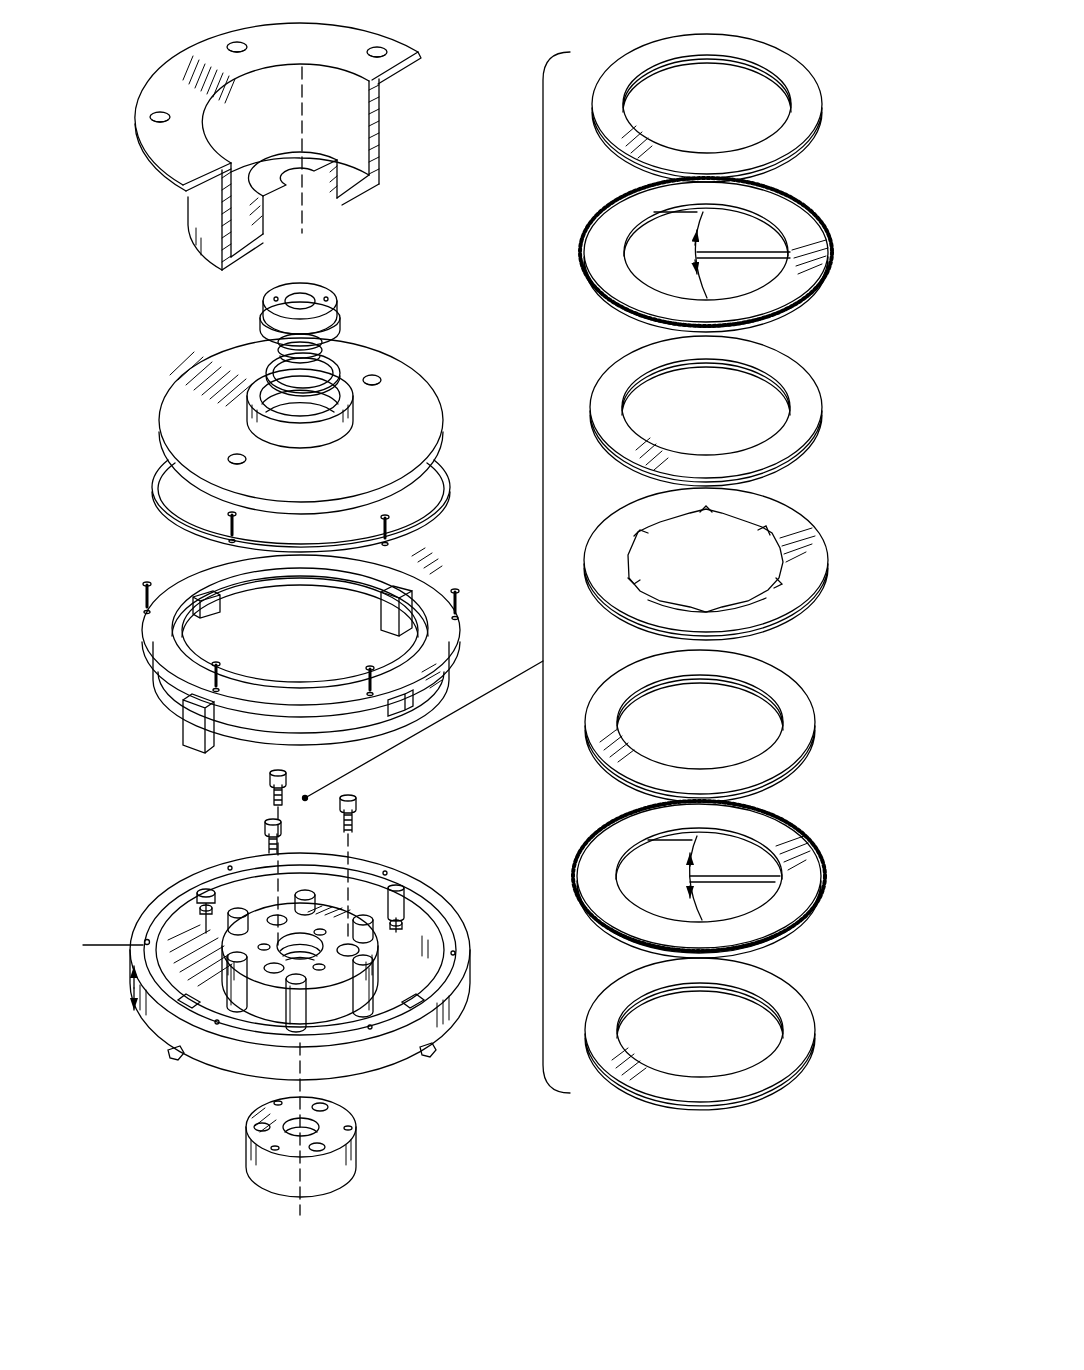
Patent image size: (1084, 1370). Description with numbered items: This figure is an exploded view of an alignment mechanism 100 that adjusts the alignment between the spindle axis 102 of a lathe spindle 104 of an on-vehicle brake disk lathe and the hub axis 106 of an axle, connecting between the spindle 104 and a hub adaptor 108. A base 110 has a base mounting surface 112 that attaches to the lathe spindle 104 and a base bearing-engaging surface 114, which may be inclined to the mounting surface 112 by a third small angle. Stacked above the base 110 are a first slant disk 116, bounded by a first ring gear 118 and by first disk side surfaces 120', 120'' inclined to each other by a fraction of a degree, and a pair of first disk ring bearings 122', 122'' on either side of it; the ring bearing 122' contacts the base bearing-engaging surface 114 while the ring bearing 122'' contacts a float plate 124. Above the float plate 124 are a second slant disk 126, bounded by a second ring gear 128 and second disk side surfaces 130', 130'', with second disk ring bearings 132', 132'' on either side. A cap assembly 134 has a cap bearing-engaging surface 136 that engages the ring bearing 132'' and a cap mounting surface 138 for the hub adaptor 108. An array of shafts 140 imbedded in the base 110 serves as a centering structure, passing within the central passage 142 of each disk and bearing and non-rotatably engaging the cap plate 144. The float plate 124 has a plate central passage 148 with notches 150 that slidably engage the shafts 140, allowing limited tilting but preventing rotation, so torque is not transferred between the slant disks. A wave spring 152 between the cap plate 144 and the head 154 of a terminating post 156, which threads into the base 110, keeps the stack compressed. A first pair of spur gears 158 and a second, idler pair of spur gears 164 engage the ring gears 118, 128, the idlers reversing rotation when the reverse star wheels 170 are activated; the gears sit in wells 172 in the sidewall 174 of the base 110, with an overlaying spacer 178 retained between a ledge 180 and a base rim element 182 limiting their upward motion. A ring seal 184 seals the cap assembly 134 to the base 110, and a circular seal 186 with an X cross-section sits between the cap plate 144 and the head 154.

The alignment mechanism 100 is at (137, 277).
The spindle axis 102 is at (297, 1075).
The lathe spindle 104 is at (353, 1147).
The hub axis 106 is at (302, 125).
The hub adaptor 108 is at (380, 160).
The base 110 is at (153, 888).
The base mounting surface 112 is at (382, 1078).
The base bearing-engaging surface 114 is at (197, 938).
The first slant disk 116 is at (568, 858).
The first ring gear 118 is at (600, 828).
The first disk side surface 120' is at (719, 922).
The first disk side surface 120'' is at (820, 827).
The first disk ring bearing 122' is at (673, 1054).
The first disk ring bearing 122'' is at (645, 726).
The float plate 124 is at (578, 544).
The second slant disk 126 is at (577, 248).
The second ring gear 128 is at (592, 222).
The second disk side surface 130' is at (731, 300).
The second disk side surface 130'' is at (824, 219).
The second disk ring bearing 132' is at (650, 411).
The second disk ring bearing 132'' is at (647, 108).
The cap assembly 134 is at (151, 369).
The cap bearing-engaging surface 136 is at (405, 492).
The cap mounting surface 138 is at (383, 397).
The shafts 140 is at (367, 917).
The central passage 142 is at (673, 146).
The cap plate 144 is at (155, 427).
The plate central passage 148 is at (727, 597).
The notches 150 is at (628, 575).
The wave spring 152 is at (267, 368).
The head 154 is at (267, 300).
The terminating post 156 is at (343, 300).
The first pair of spur gears 158 is at (200, 897).
The second pair of spur gears 164 is at (412, 1015).
The reverse star wheels 170 is at (175, 1058).
The wells 172 is at (208, 887).
The sidewall 174 is at (448, 938).
The overlaying spacer 178 is at (165, 673).
The ledge 180 is at (440, 965).
The base rim element 182 is at (143, 617).
The ring seal 184 is at (151, 482).
The circular seal 186 is at (343, 318).